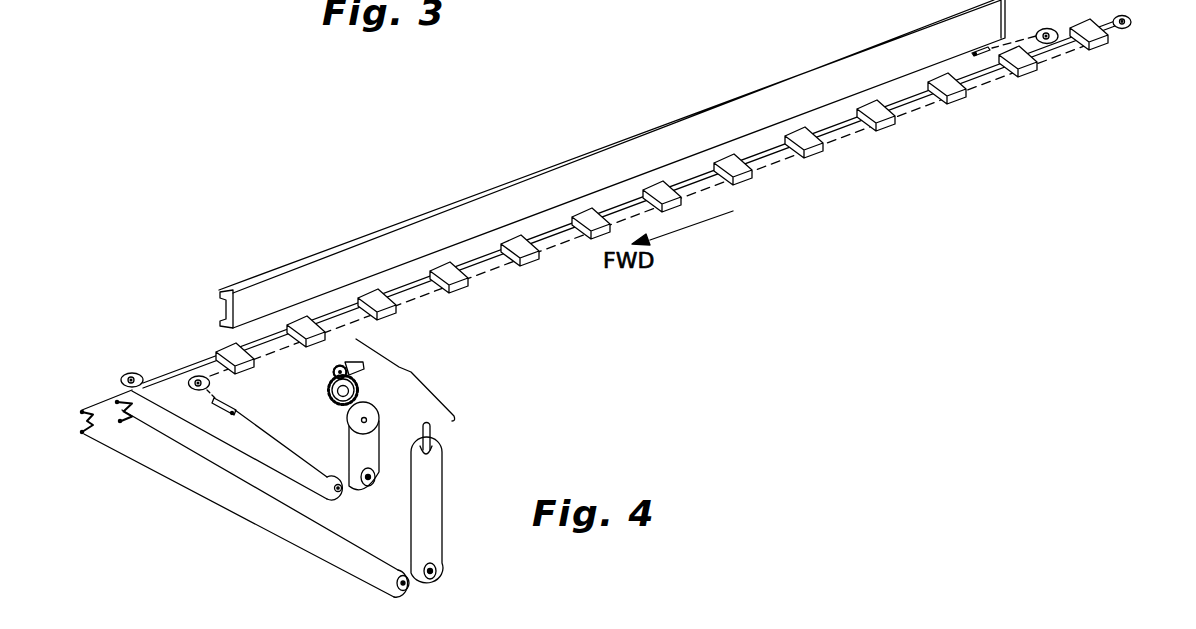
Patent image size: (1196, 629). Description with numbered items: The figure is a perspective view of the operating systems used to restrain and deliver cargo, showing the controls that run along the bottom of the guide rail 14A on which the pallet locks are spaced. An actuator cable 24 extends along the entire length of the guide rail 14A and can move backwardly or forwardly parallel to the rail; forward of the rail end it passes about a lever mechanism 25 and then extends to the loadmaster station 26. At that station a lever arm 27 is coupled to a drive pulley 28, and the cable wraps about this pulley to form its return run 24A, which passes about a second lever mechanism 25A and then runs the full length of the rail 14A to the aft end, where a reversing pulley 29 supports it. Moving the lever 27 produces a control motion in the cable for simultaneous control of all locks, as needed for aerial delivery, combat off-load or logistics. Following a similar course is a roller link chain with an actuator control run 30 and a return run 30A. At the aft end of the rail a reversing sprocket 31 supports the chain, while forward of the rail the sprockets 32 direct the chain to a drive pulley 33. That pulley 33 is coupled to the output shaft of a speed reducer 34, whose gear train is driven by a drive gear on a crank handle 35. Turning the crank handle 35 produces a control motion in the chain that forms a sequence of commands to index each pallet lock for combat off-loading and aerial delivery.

The guide rail 14A is at (432, 216).
The actuator cable 24 is at (178, 378).
The return run of the cable 24A is at (254, 516).
The lever mechanism 25 is at (130, 412).
The lever mechanism 25A is at (103, 433).
The loadmaster station 26 is at (405, 380).
The lever arm 27 is at (432, 430).
The drive pulley 28 is at (444, 453).
The reversing pulley 29 is at (1130, 21).
The actuator control run of the roller link chain 30 is at (270, 430).
The return run of the roller link chain 30A is at (313, 495).
The reversing sprocket 31 is at (1047, 28).
The sprockets 32 is at (125, 373).
The drive pulley 33 is at (375, 411).
The speed reducer 34 is at (359, 385).
The crank handle 35 is at (343, 365).